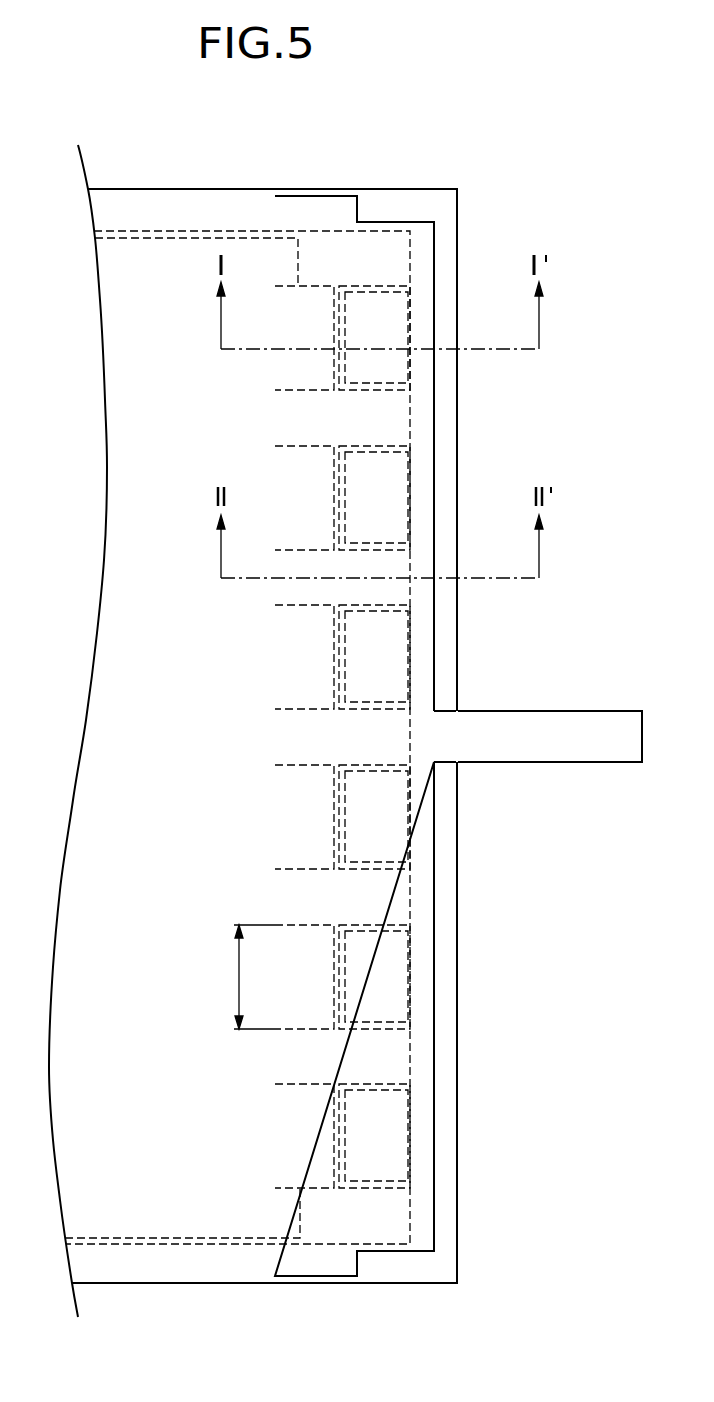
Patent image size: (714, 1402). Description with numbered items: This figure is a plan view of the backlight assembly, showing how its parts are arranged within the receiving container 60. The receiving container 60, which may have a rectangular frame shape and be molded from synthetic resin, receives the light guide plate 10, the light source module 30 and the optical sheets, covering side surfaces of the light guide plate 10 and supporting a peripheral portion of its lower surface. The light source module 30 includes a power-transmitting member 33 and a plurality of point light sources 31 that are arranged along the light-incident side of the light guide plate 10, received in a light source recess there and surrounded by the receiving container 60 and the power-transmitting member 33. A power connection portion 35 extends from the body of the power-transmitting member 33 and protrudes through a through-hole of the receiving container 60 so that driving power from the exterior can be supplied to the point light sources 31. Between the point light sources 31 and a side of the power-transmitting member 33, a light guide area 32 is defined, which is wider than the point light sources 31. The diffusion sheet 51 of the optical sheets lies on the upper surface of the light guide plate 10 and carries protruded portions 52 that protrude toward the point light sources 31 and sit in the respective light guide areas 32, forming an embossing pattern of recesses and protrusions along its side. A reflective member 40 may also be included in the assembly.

The light guide plate 10 is at (250, 1244).
The light source module 30 is at (428, 736).
The point light sources 31 is at (390, 1162).
The light guide area 32 is at (239, 977).
The power-transmitting member 33 is at (436, 1107).
The power connection portion 35 is at (570, 718).
The reflective member 40 is at (390, 1046).
The diffusion sheet 51 is at (210, 1238).
The protruded portions 52 is at (318, 1189).
The receiving container 60 is at (167, 1285).